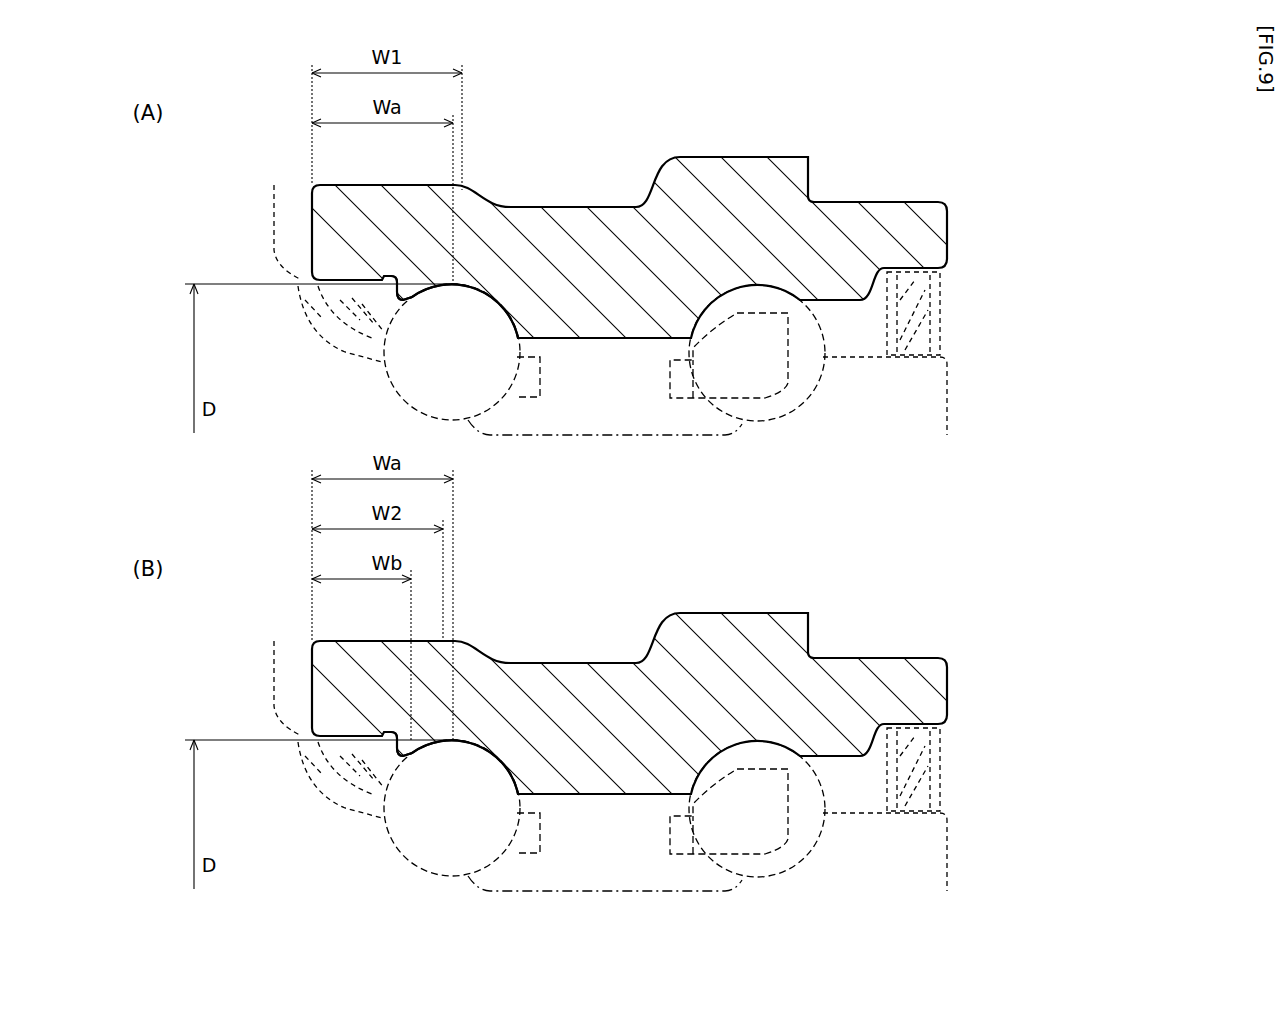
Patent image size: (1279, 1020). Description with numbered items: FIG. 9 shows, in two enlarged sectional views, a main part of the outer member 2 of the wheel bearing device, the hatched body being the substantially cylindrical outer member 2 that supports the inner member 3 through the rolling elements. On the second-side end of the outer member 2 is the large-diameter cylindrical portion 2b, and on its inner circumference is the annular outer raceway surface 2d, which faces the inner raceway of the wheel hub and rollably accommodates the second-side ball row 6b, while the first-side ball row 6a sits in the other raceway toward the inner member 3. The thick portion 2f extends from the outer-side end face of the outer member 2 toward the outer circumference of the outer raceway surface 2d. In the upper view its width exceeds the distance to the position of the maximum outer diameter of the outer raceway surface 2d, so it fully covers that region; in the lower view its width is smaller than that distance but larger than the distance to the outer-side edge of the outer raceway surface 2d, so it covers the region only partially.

The outer member 2 is at (596, 140).
The thick portion 2f is at (378, 181).
The outer raceway surface 2d is at (462, 288).
The large-diameter cylindrical portion 2b is at (350, 287).
The second-side ball row 6b is at (390, 385).
The first-side ball row 6a is at (818, 382).
The inner member 3 is at (968, 396).